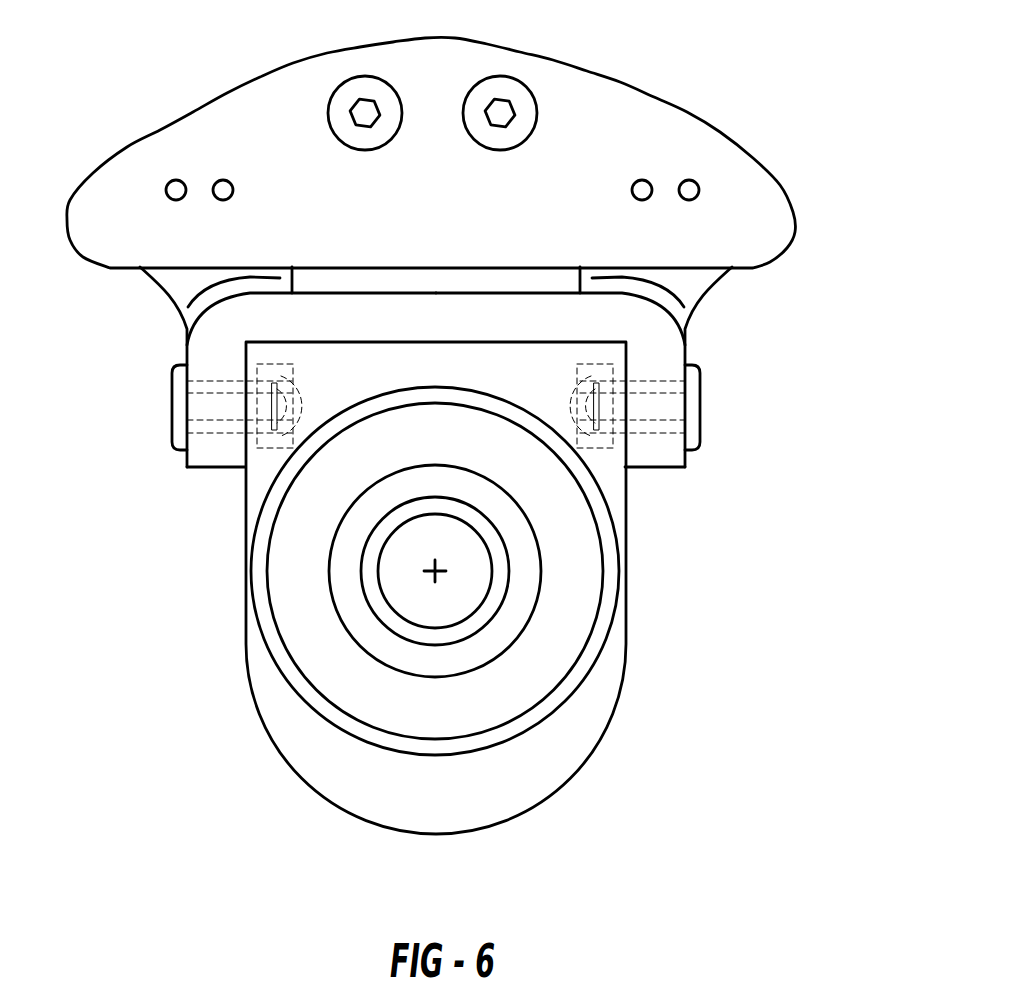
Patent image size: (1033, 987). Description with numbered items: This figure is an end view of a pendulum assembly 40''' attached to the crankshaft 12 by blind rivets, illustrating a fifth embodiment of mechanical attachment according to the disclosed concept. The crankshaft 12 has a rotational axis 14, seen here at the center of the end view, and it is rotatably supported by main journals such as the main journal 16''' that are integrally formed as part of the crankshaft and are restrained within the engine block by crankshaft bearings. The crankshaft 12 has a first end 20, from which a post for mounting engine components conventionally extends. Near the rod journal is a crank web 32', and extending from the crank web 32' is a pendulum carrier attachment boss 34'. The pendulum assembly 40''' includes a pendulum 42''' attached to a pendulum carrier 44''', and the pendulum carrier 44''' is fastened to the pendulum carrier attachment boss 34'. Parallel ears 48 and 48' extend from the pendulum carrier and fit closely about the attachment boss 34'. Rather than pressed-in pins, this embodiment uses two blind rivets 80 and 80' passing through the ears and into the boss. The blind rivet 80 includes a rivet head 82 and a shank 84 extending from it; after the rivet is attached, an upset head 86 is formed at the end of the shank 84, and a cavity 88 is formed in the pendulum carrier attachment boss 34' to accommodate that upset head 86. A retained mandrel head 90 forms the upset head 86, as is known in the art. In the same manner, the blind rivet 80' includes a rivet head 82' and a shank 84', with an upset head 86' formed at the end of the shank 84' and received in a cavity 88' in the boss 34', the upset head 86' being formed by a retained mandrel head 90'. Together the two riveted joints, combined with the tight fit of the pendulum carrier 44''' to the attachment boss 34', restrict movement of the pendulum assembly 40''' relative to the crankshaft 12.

The pendulum assembly 40''' is at (431, 141).
The pendulum 42''' is at (586, 117).
The pendulum carrier 44''' is at (237, 367).
The pendulum carrier attachment boss 34' is at (635, 367).
The parallel ear 48 is at (191, 511).
The parallel ear 48' is at (680, 498).
The rivet head 82 is at (118, 407).
The rivet head 82' is at (772, 430).
The blind rivet 80 is at (203, 399).
The blind rivet 80' is at (700, 420).
The shank 84 is at (177, 451).
The shank 84' is at (711, 479).
The upset head 86 is at (160, 403).
The upset head 86' is at (701, 402).
The cavity 88 is at (241, 482).
The cavity 88' is at (631, 466).
The retained mandrel head 90 is at (187, 450).
The retained mandrel head 90' is at (725, 406).
The crank web 32' is at (388, 588).
The main journal 16''' is at (492, 573).
The crankshaft 12 is at (392, 652).
The first end 20 is at (445, 660).
The rotational axis 14 is at (438, 573).